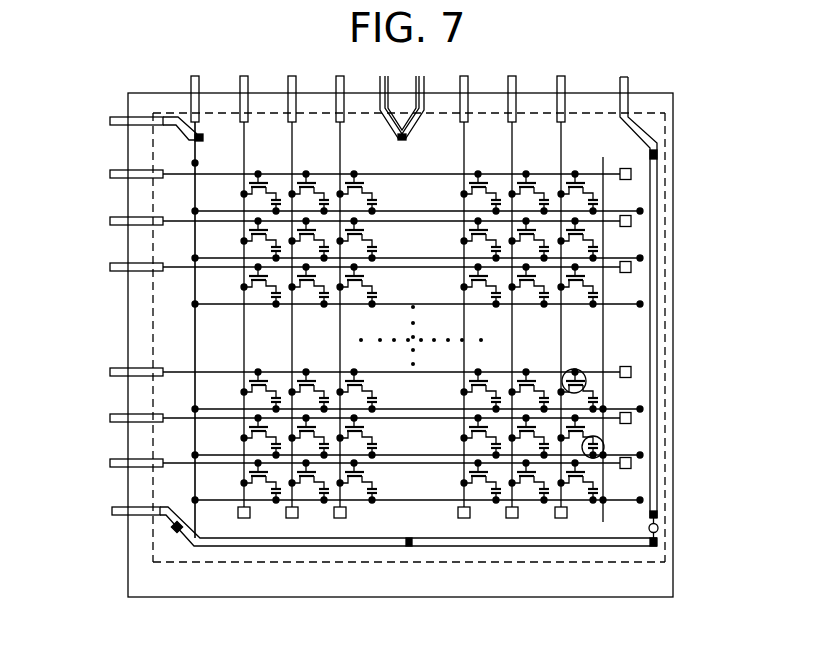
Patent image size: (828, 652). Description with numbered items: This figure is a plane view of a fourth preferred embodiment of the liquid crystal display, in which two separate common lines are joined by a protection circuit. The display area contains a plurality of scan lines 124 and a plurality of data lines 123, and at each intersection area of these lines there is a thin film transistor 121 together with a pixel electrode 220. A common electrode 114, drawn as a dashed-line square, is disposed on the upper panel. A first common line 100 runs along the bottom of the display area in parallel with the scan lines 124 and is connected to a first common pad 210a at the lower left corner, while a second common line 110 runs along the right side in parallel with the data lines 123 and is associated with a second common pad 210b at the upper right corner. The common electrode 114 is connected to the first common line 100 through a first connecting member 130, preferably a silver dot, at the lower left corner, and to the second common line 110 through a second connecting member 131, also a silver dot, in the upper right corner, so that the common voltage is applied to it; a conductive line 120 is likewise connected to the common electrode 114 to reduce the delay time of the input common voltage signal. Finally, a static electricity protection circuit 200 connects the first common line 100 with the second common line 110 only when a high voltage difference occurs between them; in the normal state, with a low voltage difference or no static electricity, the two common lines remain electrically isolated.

The first common line 100 is at (507, 546).
The second common line 110 is at (666, 268).
The common electrode 114 is at (327, 563).
The conductive line 120 is at (243, 333).
The thin film transistor 121 is at (582, 371).
The data lines 123 is at (242, 146).
The scan lines 124 is at (178, 266).
The first connecting member 130 is at (178, 531).
The second connecting member 131 is at (658, 157).
The static electricity protection circuit 200 is at (658, 529).
The first common pad 210a is at (118, 508).
The second common pad 210b is at (625, 84).
The pixel electrode 220 is at (603, 448).